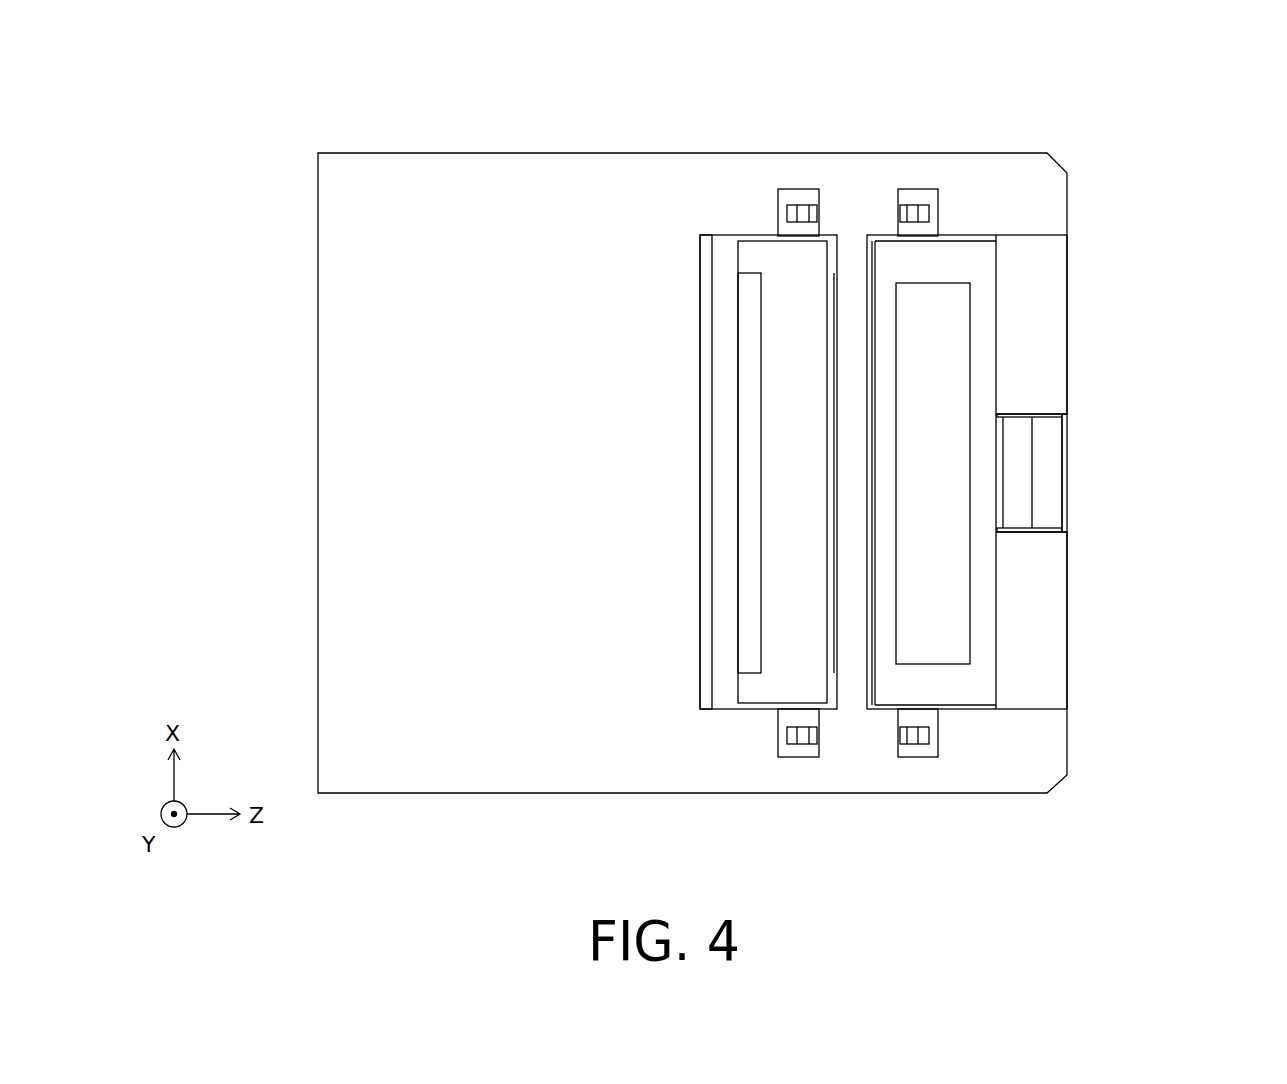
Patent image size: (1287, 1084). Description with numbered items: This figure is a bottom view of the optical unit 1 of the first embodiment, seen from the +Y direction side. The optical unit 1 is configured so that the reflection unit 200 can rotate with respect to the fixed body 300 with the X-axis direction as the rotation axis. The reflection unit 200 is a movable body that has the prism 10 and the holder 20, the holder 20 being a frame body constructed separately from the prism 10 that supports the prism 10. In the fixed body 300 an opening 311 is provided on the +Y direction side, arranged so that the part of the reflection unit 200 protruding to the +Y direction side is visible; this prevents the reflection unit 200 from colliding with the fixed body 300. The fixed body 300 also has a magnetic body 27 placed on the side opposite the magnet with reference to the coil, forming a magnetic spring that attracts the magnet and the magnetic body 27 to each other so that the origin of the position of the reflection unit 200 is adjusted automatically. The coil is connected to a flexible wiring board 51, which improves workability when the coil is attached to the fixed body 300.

The optical unit 1 is at (1142, 155).
The fixed body 300 is at (607, 153).
The opening 311 is at (702, 300).
The reflection unit 200 is at (758, 248).
The holder 20 is at (797, 574).
The prism 10 is at (750, 607).
The magnetic body 27 is at (940, 347).
The flexible wiring board 51 is at (1042, 472).